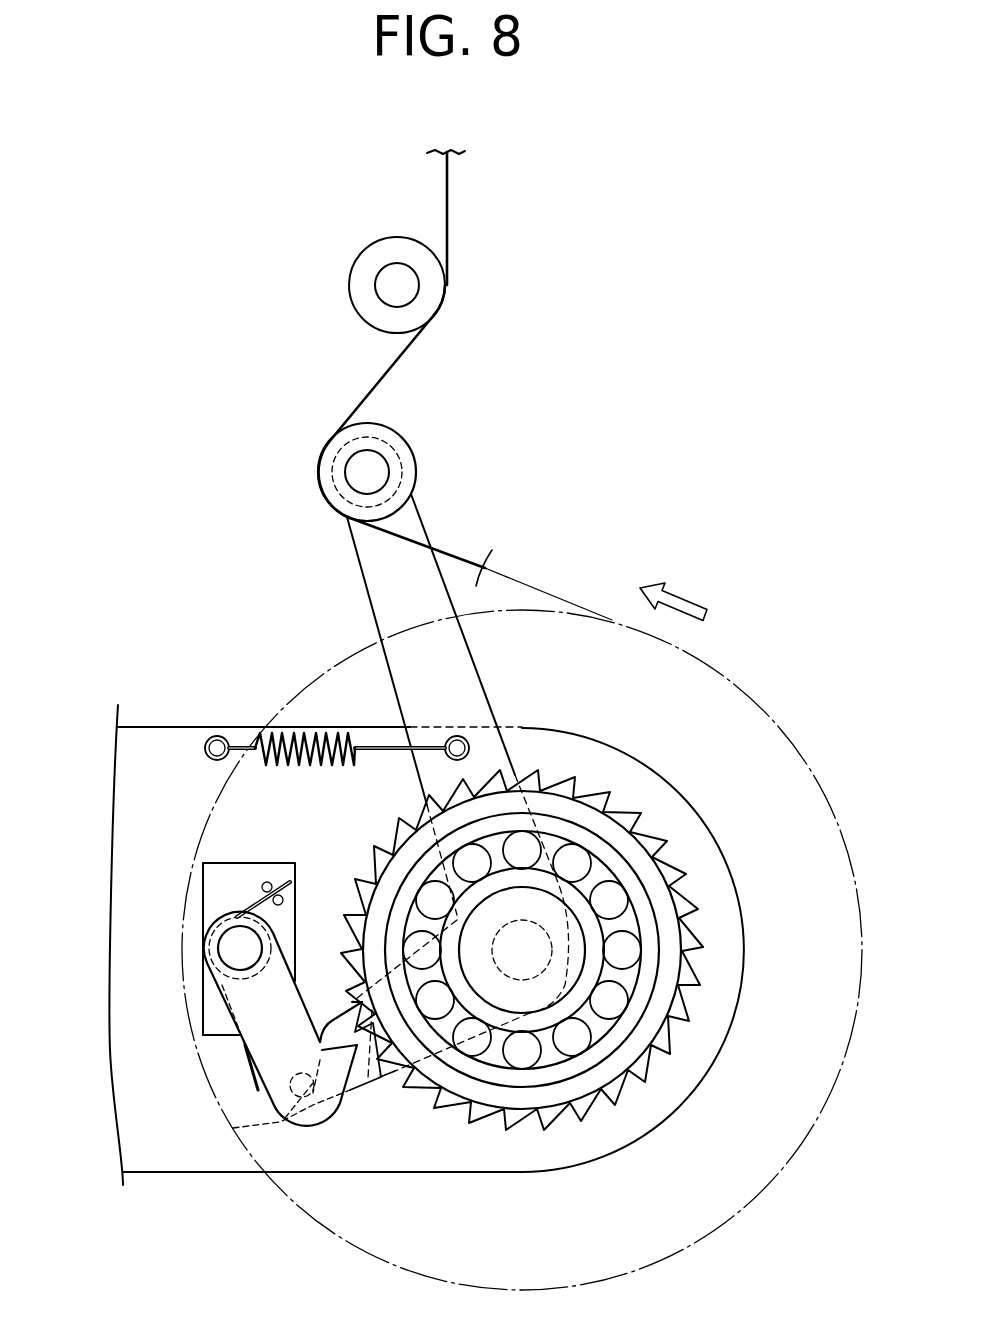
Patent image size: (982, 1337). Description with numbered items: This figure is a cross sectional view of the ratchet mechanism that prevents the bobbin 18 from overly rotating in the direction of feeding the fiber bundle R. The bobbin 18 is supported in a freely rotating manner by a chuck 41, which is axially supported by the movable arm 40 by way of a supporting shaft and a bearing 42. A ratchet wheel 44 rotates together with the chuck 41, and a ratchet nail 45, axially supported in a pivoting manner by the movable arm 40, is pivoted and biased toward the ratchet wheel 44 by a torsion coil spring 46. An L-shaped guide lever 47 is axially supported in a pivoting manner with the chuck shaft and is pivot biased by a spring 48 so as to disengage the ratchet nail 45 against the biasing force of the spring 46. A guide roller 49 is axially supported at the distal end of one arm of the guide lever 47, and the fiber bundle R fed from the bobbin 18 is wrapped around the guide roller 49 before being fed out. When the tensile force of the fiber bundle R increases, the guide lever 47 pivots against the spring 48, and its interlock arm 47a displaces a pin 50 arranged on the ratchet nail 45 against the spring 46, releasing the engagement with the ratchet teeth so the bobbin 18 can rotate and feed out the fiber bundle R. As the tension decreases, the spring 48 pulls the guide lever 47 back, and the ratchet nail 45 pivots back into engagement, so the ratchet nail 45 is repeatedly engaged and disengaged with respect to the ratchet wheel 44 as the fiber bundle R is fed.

The bobbin 18 is at (800, 745).
The movable arm 40 is at (147, 812).
The chuck 41 is at (680, 965).
The bearing 42 is at (613, 900).
The ratchet wheel 44 is at (638, 818).
The ratchet nail 45 is at (262, 1048).
The torsion coil spring 46 is at (207, 943).
The guide lever 47 is at (445, 686).
The interlock arm 47a is at (383, 1075).
The spring 48 is at (306, 764).
The guide roller 49 is at (400, 431).
The pin 50 is at (233, 1128).